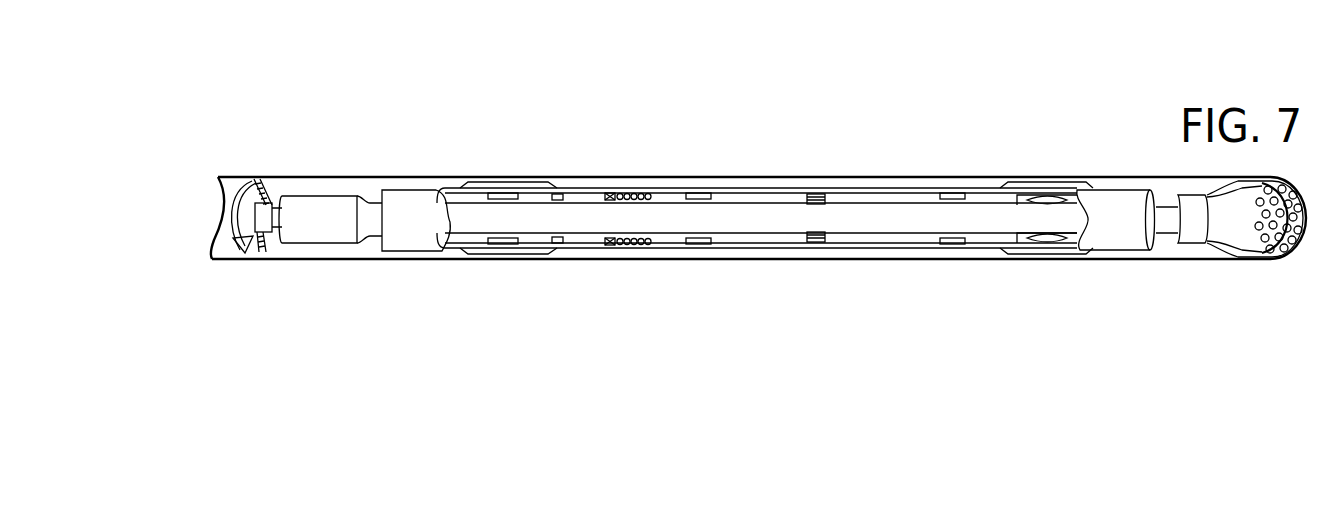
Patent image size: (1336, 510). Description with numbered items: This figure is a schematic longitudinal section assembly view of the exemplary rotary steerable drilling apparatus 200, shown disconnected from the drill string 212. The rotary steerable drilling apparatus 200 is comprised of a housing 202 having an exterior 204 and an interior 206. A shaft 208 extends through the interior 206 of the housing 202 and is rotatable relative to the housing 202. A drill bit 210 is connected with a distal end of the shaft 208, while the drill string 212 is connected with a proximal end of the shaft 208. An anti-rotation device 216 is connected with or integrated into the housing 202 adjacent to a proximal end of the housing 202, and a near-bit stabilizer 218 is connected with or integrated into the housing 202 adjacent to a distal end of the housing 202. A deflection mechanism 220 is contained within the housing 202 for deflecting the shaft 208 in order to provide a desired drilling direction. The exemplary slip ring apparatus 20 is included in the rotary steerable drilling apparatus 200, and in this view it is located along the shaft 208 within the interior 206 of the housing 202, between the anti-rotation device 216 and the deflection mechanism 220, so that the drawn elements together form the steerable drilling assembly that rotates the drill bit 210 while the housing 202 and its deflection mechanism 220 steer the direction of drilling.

The rotary steerable drilling apparatus 200 is at (916, 84).
The housing 202 is at (1152, 118).
The exterior 204 is at (411, 244).
The interior 206 is at (851, 197).
The shaft 208 is at (756, 214).
The drill bit 210 is at (1252, 253).
The drill string 212 is at (263, 230).
The anti-rotation device 216 is at (489, 184).
The near-bit stabilizer 218 is at (1057, 186).
The deflection mechanism 220 is at (820, 248).
The slip ring apparatus 20 is at (598, 197).